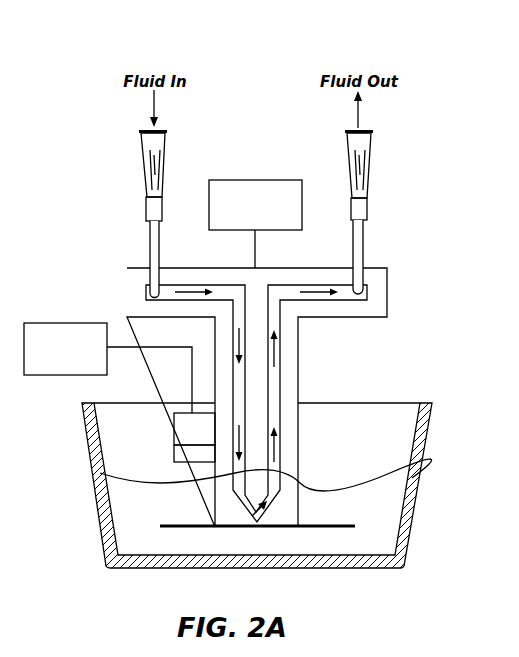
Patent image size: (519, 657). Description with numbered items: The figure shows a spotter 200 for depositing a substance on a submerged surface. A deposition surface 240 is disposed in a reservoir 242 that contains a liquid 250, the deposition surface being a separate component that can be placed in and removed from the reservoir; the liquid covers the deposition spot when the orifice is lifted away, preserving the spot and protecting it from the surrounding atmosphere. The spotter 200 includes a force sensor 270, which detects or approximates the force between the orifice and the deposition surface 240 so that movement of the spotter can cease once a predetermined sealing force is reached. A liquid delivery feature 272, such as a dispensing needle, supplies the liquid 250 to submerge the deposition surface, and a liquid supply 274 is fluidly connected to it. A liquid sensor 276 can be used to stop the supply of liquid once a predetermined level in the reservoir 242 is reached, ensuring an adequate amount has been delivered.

The spotter 200 is at (249, 60).
The force sensor 270 is at (246, 180).
The liquid supply 274 is at (60, 323).
The liquid delivery feature 272 is at (174, 426).
The liquid sensor 276 is at (174, 452).
The reservoir 242 is at (428, 430).
The liquid 250 is at (182, 514).
The deposition surface 240 is at (323, 524).